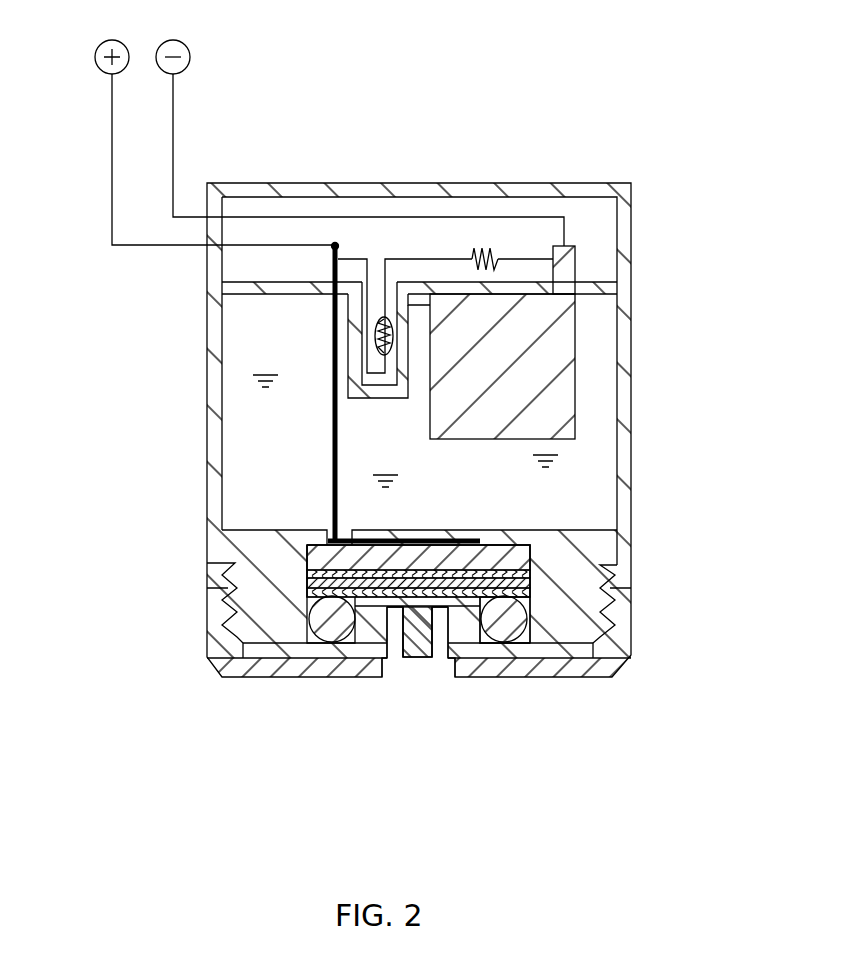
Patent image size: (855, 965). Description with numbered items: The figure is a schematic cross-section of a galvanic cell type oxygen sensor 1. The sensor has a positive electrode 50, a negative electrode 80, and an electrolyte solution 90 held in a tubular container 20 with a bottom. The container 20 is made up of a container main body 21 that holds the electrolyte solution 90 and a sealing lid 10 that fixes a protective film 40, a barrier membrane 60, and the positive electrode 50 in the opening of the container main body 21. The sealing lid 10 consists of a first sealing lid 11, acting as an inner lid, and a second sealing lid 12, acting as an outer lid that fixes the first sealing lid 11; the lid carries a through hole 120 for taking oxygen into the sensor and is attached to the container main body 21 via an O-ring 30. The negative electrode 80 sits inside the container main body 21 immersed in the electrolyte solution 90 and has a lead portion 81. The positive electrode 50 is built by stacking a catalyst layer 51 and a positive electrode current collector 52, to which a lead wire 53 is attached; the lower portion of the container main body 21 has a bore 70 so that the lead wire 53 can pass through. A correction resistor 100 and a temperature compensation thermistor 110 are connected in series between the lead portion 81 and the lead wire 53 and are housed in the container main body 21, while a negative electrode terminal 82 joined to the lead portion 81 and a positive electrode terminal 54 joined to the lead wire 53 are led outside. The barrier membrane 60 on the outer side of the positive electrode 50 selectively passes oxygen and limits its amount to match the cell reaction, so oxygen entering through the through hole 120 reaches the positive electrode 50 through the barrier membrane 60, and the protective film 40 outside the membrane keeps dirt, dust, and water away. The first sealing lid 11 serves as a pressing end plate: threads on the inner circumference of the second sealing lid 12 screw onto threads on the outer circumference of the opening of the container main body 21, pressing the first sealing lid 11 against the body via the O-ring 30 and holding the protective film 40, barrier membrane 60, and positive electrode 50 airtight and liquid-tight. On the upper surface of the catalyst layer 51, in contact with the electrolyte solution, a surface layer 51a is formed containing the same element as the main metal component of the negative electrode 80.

The oxygen sensor 1 is at (641, 140).
The sealing lid 10 is at (318, 745).
The first sealing lid 11 is at (258, 648).
The second sealing lid 12 is at (308, 668).
The container 20 is at (228, 547).
The container main body 21 is at (210, 353).
The O-ring 30 is at (507, 625).
The protective film 40 is at (390, 607).
The positive electrode 50 is at (708, 525).
The catalyst layer 51 is at (530, 588).
The surface layer 51a is at (530, 570).
The positive electrode current collector 52 is at (530, 555).
The lead wire 53 is at (336, 322).
The positive electrode terminal 54 is at (98, 47).
The barrier membrane 60 is at (310, 604).
The bore 70 is at (323, 537).
The negative electrode 80 is at (538, 362).
The lead portion 81 is at (575, 258).
The negative electrode terminal 82 is at (186, 45).
The electrolyte solution 90 is at (588, 480).
The correction resistor 100 is at (487, 250).
The temperature compensation thermistor 110 is at (382, 317).
The through hole 120 is at (417, 660).